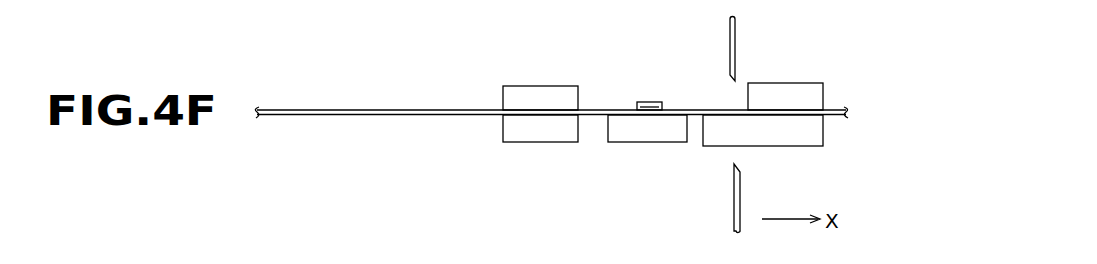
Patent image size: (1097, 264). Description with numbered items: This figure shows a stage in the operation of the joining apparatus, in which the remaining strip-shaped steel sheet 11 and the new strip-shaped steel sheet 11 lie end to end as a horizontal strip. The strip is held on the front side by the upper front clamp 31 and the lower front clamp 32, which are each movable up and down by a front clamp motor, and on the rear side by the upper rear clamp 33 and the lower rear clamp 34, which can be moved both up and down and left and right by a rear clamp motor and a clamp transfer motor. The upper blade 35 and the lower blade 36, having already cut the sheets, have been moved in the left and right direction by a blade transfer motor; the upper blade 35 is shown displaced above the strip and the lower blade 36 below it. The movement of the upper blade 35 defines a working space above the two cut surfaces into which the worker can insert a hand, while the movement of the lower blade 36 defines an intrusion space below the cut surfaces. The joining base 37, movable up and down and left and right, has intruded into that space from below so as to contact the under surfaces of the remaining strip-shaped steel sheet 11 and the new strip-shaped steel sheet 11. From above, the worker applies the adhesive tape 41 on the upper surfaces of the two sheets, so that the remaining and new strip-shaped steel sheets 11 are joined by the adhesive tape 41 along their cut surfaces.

The strip-shaped steel sheet 11 is at (335, 108).
The upper front clamp 31 is at (815, 83).
The lower front clamp 32 is at (795, 146).
The upper rear clamp 33 is at (578, 86).
The lower rear clamp 34 is at (503, 142).
The upper blade 35 is at (736, 40).
The lower blade 36 is at (734, 202).
The joining base 37 is at (650, 142).
The adhesive tape 41 is at (638, 102).